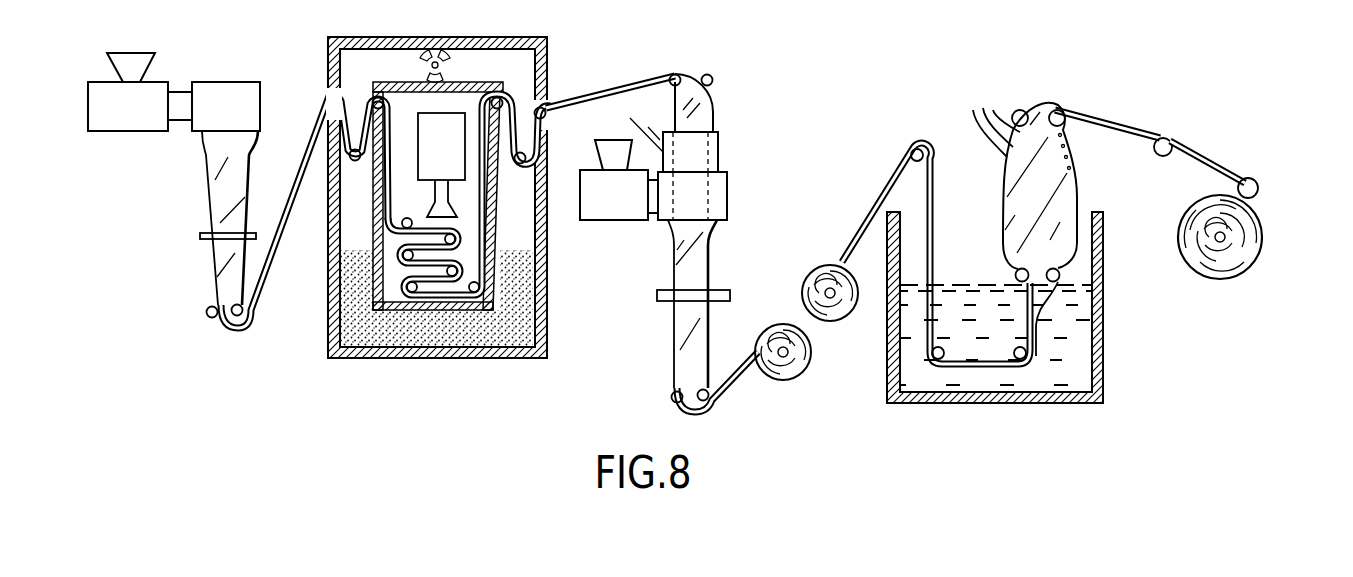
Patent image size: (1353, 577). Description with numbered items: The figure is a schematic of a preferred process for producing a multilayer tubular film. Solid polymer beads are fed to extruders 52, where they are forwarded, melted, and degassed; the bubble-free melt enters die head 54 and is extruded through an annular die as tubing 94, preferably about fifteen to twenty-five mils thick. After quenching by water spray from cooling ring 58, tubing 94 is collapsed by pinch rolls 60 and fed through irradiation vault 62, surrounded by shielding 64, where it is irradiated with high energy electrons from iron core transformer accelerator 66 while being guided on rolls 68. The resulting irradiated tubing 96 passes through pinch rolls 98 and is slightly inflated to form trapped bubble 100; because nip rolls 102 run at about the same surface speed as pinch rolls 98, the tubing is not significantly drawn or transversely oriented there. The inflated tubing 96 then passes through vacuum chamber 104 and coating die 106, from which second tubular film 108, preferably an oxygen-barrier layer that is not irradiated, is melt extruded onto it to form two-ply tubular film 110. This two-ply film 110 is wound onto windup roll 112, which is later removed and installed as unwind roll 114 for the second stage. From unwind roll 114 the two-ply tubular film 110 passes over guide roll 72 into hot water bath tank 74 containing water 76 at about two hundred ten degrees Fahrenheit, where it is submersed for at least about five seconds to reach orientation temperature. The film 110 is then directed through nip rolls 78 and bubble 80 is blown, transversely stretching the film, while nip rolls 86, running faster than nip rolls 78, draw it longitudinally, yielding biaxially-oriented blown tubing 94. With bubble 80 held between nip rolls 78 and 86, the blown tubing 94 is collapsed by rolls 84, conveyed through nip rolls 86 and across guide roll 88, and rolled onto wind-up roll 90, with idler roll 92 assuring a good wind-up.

The extruder 52 is at (110, 120).
The die head 54 is at (227, 100).
The cooling ring 58 is at (200, 235).
The pinch rolls 60 is at (207, 311).
The irradiation vault 62 is at (545, 233).
The shielding 64 is at (410, 330).
The iron core transformer accelerator 66 is at (450, 135).
The rolls 68 is at (408, 290).
The guide roll 72 is at (916, 148).
The hot water bath tank 74 is at (1103, 362).
The water 76 is at (1083, 328).
The nip rolls 78 is at (1015, 277).
The bubble 80 is at (1060, 198).
The rolls 84 is at (976, 126).
The nip rolls 86 is at (1062, 108).
The guide roll 88 is at (1172, 140).
The wind-up roll 90 is at (1262, 237).
The idler roll 92 is at (1258, 188).
The tubing 94 is at (207, 187).
The irradiated tubing 96 is at (607, 75).
The pinch rolls 98 is at (714, 75).
The trapped bubble 100 is at (705, 117).
The nip rolls 102 is at (672, 397).
The vacuum chamber 104 is at (720, 150).
The coating die 106 is at (730, 190).
The second tubular film 108 is at (663, 233).
The two-ply tubular film 110 is at (710, 258).
The windup roll 112 is at (790, 380).
The unwind roll 114 is at (833, 325).